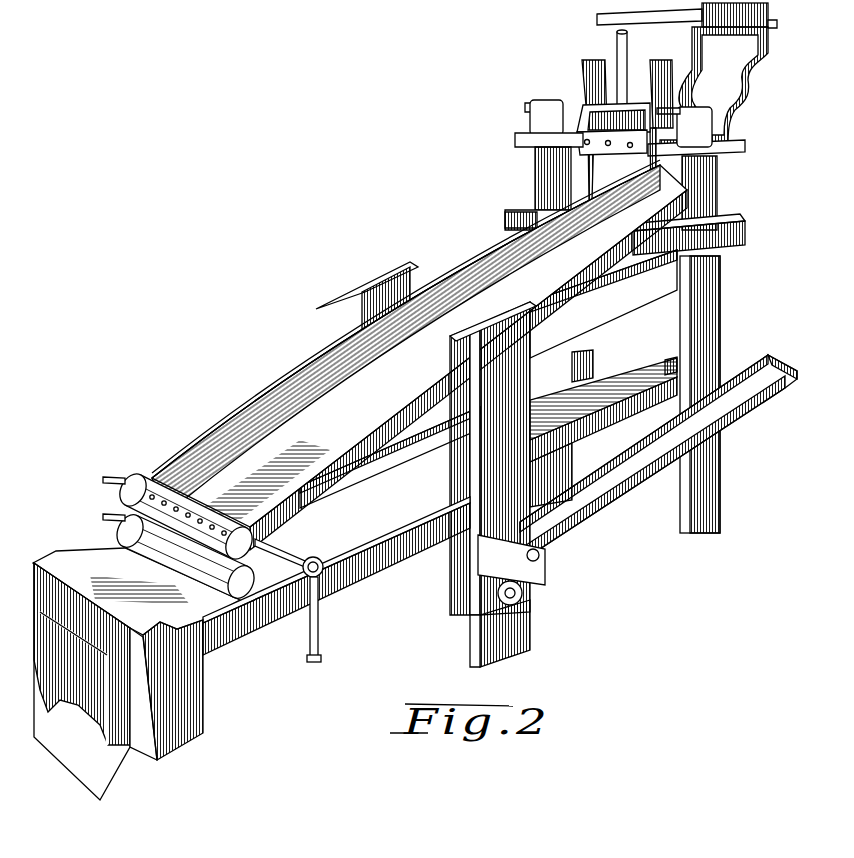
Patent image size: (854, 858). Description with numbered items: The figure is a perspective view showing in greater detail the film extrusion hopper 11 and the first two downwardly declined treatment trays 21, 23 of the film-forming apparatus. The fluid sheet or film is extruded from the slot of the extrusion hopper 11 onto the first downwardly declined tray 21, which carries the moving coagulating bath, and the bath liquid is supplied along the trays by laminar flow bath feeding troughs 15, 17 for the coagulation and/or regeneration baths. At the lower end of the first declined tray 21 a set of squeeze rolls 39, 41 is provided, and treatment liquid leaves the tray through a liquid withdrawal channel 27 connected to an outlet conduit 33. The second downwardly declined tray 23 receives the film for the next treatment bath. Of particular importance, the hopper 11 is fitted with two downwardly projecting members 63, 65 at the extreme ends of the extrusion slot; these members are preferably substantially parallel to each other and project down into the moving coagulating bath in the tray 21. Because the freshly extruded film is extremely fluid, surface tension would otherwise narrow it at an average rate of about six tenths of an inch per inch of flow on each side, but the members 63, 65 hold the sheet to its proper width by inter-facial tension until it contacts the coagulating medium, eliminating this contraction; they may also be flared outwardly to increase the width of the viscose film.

The extrusion hopper 11 is at (590, 112).
The laminar flow bath feeding trough 15 is at (768, 50).
The laminar flow bath feeding trough 17 is at (82, 763).
The downwardly declined tray 21 is at (295, 415).
The downwardly declined tray 23 is at (345, 543).
The liquid withdrawal channel 27 is at (158, 500).
The outlet conduit 33 is at (320, 644).
The squeeze roll 39 is at (127, 490).
The squeeze roll 41 is at (122, 540).
The downwardly projecting member 63 is at (590, 172).
The downwardly projecting member 65 is at (658, 183).